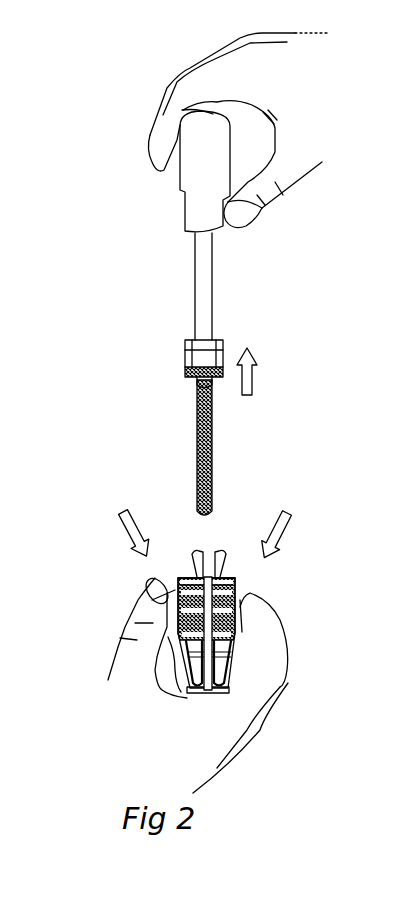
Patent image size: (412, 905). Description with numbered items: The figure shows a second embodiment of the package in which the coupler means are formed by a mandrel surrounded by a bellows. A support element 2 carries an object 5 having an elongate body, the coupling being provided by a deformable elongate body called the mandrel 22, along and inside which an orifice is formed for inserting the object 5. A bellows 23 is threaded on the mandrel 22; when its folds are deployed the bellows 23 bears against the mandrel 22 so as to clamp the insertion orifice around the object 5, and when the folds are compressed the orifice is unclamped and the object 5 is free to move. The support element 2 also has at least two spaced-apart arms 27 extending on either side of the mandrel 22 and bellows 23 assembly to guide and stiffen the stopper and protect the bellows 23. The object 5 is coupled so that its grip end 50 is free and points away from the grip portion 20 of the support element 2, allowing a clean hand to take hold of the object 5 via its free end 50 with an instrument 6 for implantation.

The support element 2 is at (237, 663).
The object 5 is at (212, 433).
The instrument 6 is at (202, 282).
The grip portion 20 is at (230, 677).
The mandrel 22 is at (225, 555).
The bellows 23 is at (237, 583).
The arms 27 is at (238, 593).
The grip end 50 is at (183, 357).